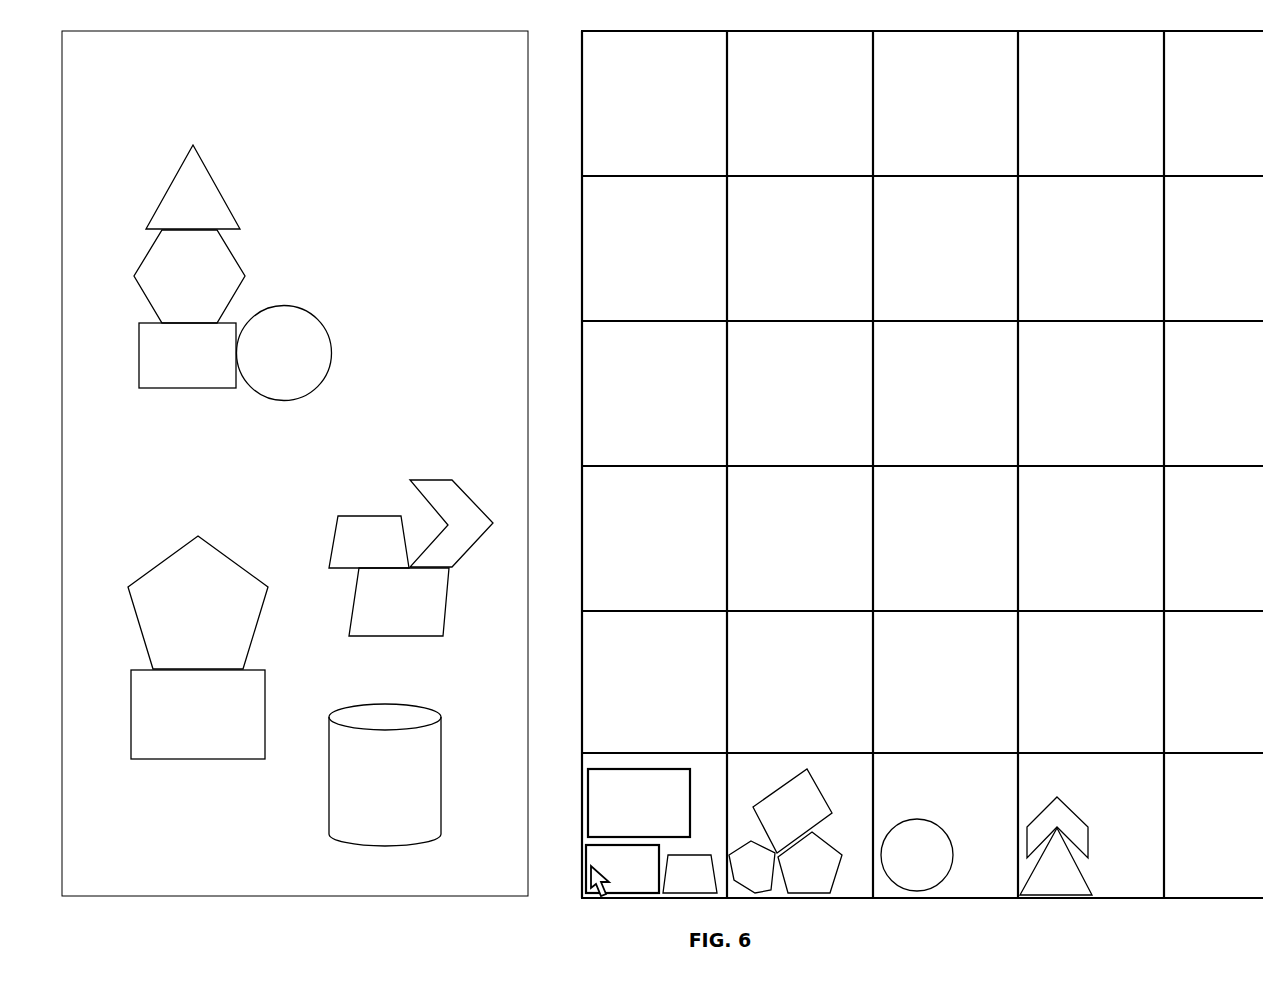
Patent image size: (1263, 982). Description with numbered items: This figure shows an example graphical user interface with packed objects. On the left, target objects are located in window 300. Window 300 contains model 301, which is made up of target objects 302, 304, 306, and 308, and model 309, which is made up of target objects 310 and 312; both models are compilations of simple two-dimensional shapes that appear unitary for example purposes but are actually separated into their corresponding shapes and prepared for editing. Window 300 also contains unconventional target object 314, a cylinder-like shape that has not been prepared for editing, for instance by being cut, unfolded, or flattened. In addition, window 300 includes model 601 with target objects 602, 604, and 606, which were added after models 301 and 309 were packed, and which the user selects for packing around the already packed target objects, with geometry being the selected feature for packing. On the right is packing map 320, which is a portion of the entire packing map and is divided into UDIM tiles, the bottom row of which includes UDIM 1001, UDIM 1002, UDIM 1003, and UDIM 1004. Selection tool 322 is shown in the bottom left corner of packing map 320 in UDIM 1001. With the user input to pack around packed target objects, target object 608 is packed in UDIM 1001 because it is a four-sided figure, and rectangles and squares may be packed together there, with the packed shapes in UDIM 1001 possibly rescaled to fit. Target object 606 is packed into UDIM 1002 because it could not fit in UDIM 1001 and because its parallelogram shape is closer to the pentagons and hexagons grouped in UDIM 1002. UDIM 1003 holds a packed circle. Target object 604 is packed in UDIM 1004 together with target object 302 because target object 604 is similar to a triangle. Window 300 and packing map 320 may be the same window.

The window 300 is at (290, 87).
The model 301 is at (295, 185).
The target object 302 is at (218, 183).
The target object 304 is at (235, 252).
The target object 306 is at (323, 320).
The target object 308 is at (202, 390).
The model 309 is at (150, 538).
The target object 310 is at (228, 546).
The target object 312 is at (269, 686).
The unconventional target object 314 is at (392, 695).
The model 601 is at (382, 447).
The target object 602 is at (388, 512).
The target object 604 is at (424, 477).
The target object 606 is at (353, 607).
The target object 608 is at (693, 853).
The packing map 320 is at (1188, 126).
The selection tool 322 is at (588, 873).
The UDIM 1001 is at (703, 750).
The UDIM 1002 is at (798, 750).
The UDIM 1003 is at (960, 752).
The UDIM 1004 is at (1105, 752).